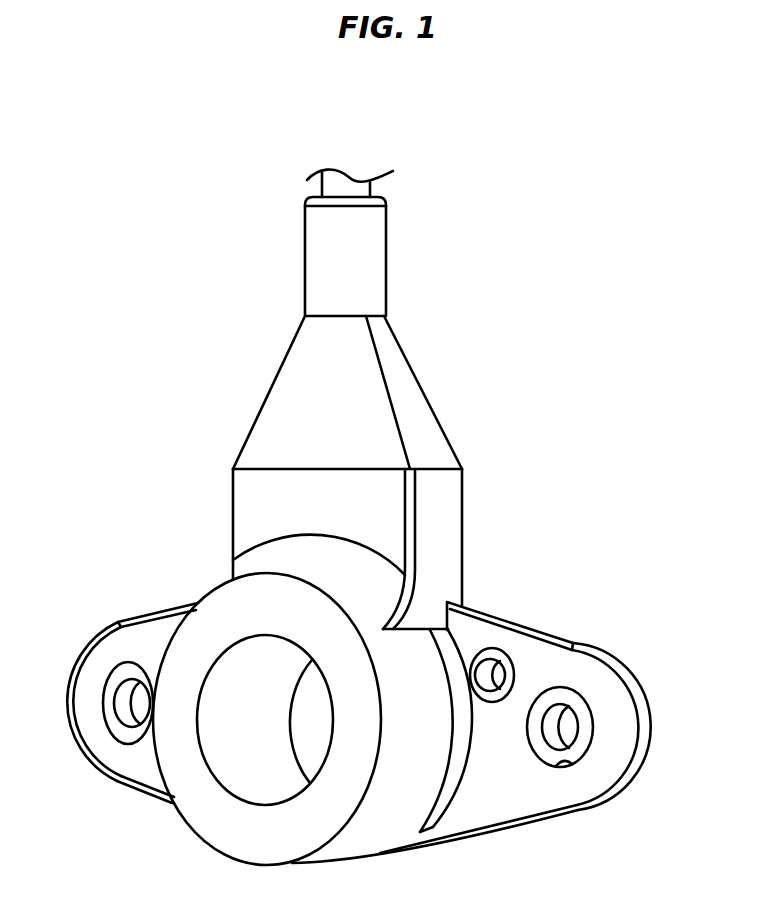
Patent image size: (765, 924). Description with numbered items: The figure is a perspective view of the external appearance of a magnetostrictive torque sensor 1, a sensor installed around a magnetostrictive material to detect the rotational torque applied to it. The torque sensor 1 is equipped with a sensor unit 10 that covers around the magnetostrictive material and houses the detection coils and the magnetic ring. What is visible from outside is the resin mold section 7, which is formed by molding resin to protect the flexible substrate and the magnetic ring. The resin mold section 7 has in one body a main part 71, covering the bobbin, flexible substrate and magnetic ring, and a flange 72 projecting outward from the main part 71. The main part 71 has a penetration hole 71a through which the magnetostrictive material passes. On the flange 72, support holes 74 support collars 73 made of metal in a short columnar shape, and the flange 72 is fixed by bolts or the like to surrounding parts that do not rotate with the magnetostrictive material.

The magnetostrictive torque sensor 1 is at (220, 175).
The resin mold section 7 is at (448, 408).
The sensor unit 10 is at (195, 583).
The main part 71 is at (344, 850).
The penetration hole 71a is at (252, 782).
The flange 72 is at (120, 770).
The collar 73 is at (110, 685).
The support hole 74 is at (573, 762).